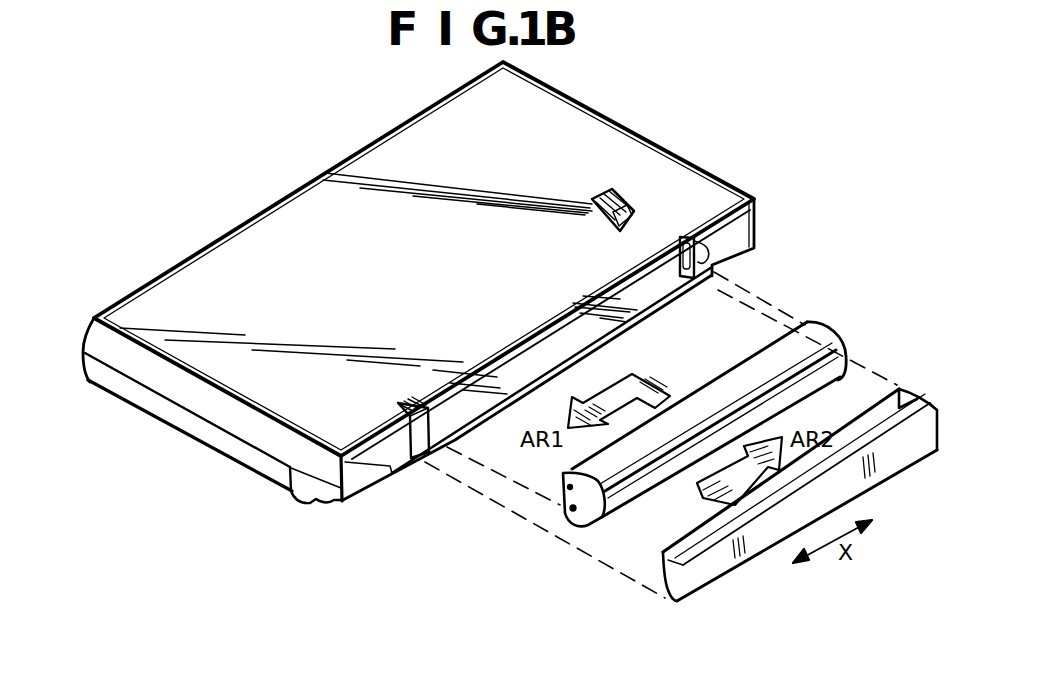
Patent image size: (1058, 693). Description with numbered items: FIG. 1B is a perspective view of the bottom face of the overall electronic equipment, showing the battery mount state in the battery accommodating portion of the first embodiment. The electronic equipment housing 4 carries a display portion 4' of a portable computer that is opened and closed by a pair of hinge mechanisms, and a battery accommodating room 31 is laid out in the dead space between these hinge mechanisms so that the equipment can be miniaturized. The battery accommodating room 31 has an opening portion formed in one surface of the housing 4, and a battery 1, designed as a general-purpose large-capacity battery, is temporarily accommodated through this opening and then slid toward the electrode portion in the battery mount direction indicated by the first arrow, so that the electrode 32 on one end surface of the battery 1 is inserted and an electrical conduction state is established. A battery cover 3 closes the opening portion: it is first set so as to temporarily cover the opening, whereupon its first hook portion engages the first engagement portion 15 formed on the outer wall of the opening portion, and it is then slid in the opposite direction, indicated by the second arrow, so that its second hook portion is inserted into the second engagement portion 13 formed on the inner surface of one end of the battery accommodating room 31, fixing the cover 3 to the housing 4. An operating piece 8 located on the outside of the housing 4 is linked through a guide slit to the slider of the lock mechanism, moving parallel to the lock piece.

The electronic equipment housing 4 is at (424, 259).
The display portion 4' is at (212, 410).
The battery accommodating room 31 is at (528, 360).
The operating piece 8 is at (614, 198).
The second engagement portion 13 is at (708, 232).
The first engagement portion 15 is at (405, 404).
The battery 1 is at (673, 442).
The electrode 32 is at (571, 512).
The battery cover 3 is at (900, 456).